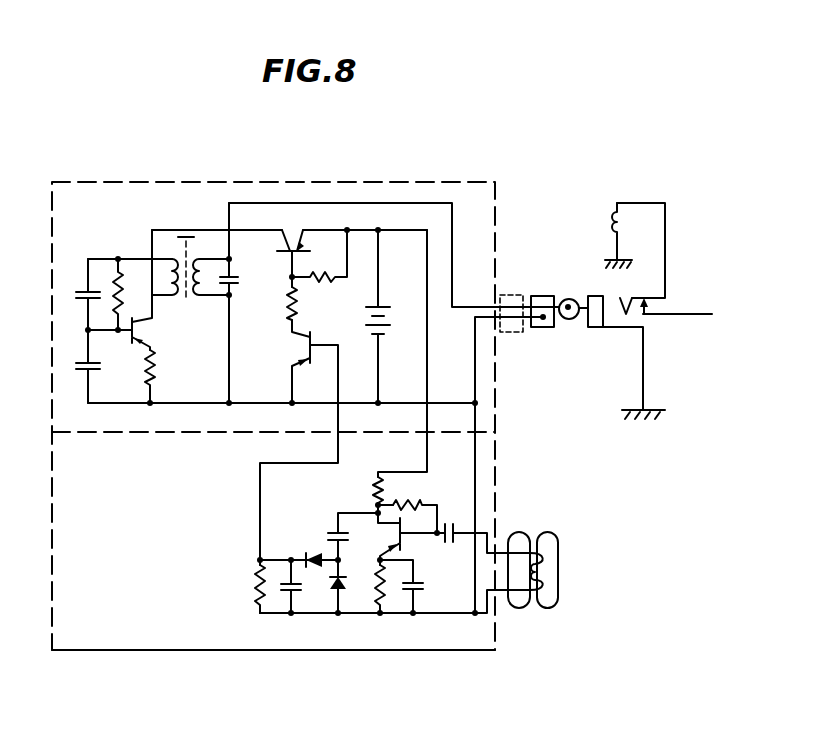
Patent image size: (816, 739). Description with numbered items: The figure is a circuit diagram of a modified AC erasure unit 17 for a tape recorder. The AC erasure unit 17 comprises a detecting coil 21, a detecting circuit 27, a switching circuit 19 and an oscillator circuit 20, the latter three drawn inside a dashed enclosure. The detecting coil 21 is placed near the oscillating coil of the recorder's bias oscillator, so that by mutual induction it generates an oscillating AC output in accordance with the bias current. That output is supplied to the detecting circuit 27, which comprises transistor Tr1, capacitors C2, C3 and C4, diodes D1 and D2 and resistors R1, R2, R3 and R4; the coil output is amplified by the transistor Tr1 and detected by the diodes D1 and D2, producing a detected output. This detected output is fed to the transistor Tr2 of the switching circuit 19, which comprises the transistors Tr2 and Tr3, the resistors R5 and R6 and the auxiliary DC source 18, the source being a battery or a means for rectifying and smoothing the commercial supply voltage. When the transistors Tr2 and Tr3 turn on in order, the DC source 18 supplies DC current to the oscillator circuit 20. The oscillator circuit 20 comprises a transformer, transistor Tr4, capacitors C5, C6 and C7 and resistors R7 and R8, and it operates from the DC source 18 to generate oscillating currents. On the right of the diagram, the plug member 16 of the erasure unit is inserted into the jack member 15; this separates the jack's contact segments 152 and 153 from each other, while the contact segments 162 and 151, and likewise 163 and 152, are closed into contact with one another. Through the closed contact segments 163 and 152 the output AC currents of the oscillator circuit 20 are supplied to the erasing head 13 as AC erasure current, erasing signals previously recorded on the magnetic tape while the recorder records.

The erasing head 13 is at (612, 222).
The jack member 15 is at (617, 318).
The plug member 16 is at (513, 326).
The AC erasure unit 17 is at (203, 631).
The auxiliary DC source 18 is at (386, 316).
The switching circuit 19 is at (406, 193).
The oscillator circuit 20 is at (172, 192).
The detecting coil 21 is at (548, 532).
The detecting circuit 27 is at (423, 644).
The contact segment 151 is at (594, 328).
The contact segment 152 is at (636, 298).
The contact segment 153 is at (662, 315).
The contact segment 162 is at (540, 296).
The contact segment 163 is at (568, 299).
The resistor R1 is at (376, 493).
The resistor R2 is at (416, 503).
The resistor R3 is at (385, 598).
The resistor R4 is at (259, 593).
The resistor R5 is at (318, 283).
The resistor R6 is at (288, 296).
The resistor R7 is at (113, 282).
The resistor R8 is at (154, 372).
The capacitor C2 is at (421, 596).
The capacitor C3 is at (331, 532).
The capacitor C4 is at (300, 595).
The capacitor C5 is at (240, 278).
The capacitor C6 is at (85, 290).
The capacitor C7 is at (96, 368).
The diode D1 is at (345, 592).
The diode D2 is at (306, 553).
The transistor Tr1 is at (406, 540).
The transistor Tr2 is at (300, 347).
The transistor Tr3 is at (291, 241).
The transistor Tr4 is at (147, 334).